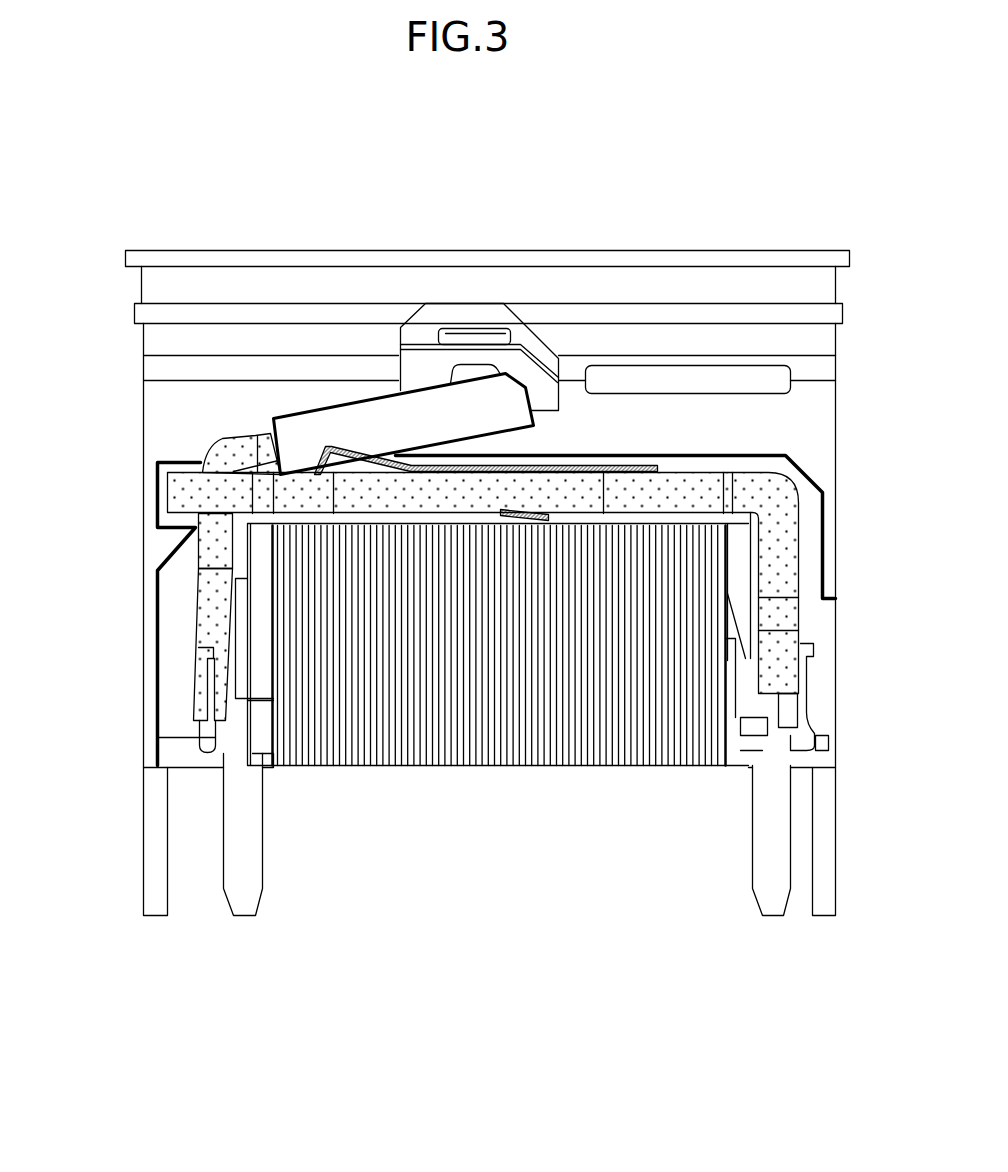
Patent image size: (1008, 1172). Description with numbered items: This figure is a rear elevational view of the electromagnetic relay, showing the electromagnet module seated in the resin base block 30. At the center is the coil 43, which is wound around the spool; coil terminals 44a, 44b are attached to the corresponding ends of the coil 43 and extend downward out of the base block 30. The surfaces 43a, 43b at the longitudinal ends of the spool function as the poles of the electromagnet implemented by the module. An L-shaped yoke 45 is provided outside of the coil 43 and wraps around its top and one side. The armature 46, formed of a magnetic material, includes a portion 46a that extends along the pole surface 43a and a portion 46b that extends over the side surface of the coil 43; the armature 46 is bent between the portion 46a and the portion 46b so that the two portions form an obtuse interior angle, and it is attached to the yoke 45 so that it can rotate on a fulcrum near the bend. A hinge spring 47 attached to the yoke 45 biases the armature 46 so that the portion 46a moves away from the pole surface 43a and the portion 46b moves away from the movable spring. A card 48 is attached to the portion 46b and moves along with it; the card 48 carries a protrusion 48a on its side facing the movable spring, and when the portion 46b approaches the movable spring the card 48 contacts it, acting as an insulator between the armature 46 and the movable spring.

The base block 30 is at (716, 248).
The coil 43 is at (490, 712).
The surface 43a is at (273, 663).
The surface 43b is at (725, 660).
The coil terminal 44a is at (243, 892).
The coil terminal 44b is at (772, 890).
The yoke 45 is at (782, 538).
The armature 46 is at (146, 571).
The portion 46a is at (208, 585).
The portion 46b is at (268, 448).
The hinge spring 47 is at (345, 448).
The card 48 is at (377, 410).
The protrusion 48a is at (470, 362).